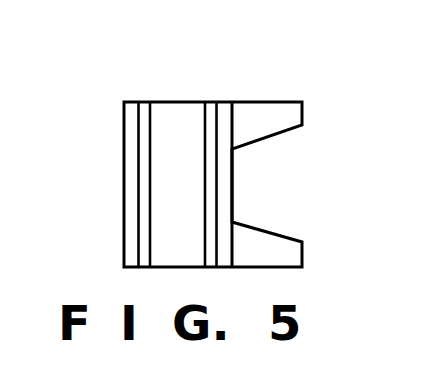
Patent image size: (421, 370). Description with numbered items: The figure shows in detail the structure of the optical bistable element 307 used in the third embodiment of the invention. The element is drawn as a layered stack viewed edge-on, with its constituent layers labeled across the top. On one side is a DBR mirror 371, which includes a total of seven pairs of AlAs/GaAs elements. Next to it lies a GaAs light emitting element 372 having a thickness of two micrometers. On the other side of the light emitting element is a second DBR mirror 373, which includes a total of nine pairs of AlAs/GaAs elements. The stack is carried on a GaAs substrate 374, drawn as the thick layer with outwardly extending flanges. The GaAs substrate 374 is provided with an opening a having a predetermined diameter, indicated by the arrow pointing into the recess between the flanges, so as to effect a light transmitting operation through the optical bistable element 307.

The optical bistable element 307 is at (82, 52).
The DBR mirror 371 is at (130, 108).
The GaAs light emitting element 372 is at (173, 110).
The DBR mirror 373 is at (213, 105).
The GaAs substrate 374 is at (258, 110).
The opening a is at (255, 189).